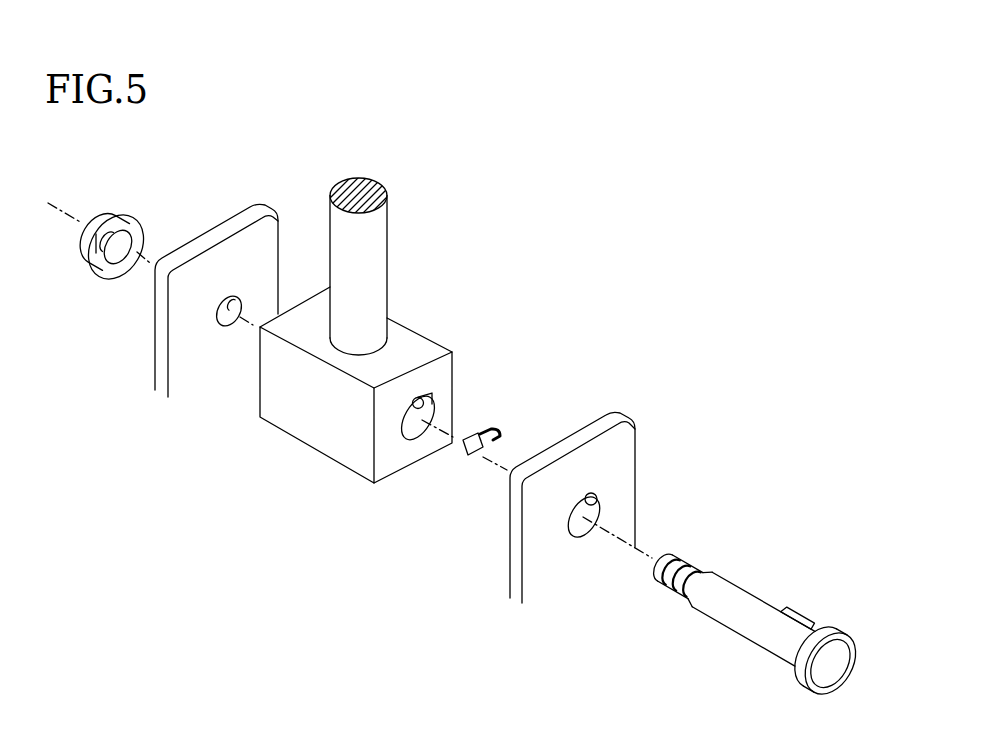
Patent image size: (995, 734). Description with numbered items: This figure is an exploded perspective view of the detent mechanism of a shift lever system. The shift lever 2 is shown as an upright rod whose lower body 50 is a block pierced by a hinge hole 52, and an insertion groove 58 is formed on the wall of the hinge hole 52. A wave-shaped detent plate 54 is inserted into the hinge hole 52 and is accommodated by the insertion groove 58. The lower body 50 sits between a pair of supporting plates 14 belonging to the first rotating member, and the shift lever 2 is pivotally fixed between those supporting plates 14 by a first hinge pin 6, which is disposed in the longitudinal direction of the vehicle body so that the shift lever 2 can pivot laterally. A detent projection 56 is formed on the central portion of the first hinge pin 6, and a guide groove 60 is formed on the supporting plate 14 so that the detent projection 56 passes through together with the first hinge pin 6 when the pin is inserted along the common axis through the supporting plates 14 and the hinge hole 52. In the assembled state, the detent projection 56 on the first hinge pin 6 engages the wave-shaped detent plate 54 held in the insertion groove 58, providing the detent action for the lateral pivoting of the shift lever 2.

The shift lever 2 is at (403, 240).
The lower body 50 is at (423, 350).
The hinge hole 52 is at (430, 414).
The insertion groove 58 is at (425, 396).
The detent plate 54 is at (467, 453).
The supporting plate 14 is at (527, 545).
The guide groove 60 is at (597, 501).
The first hinge pin 6 is at (767, 606).
The detent projection 56 is at (788, 608).